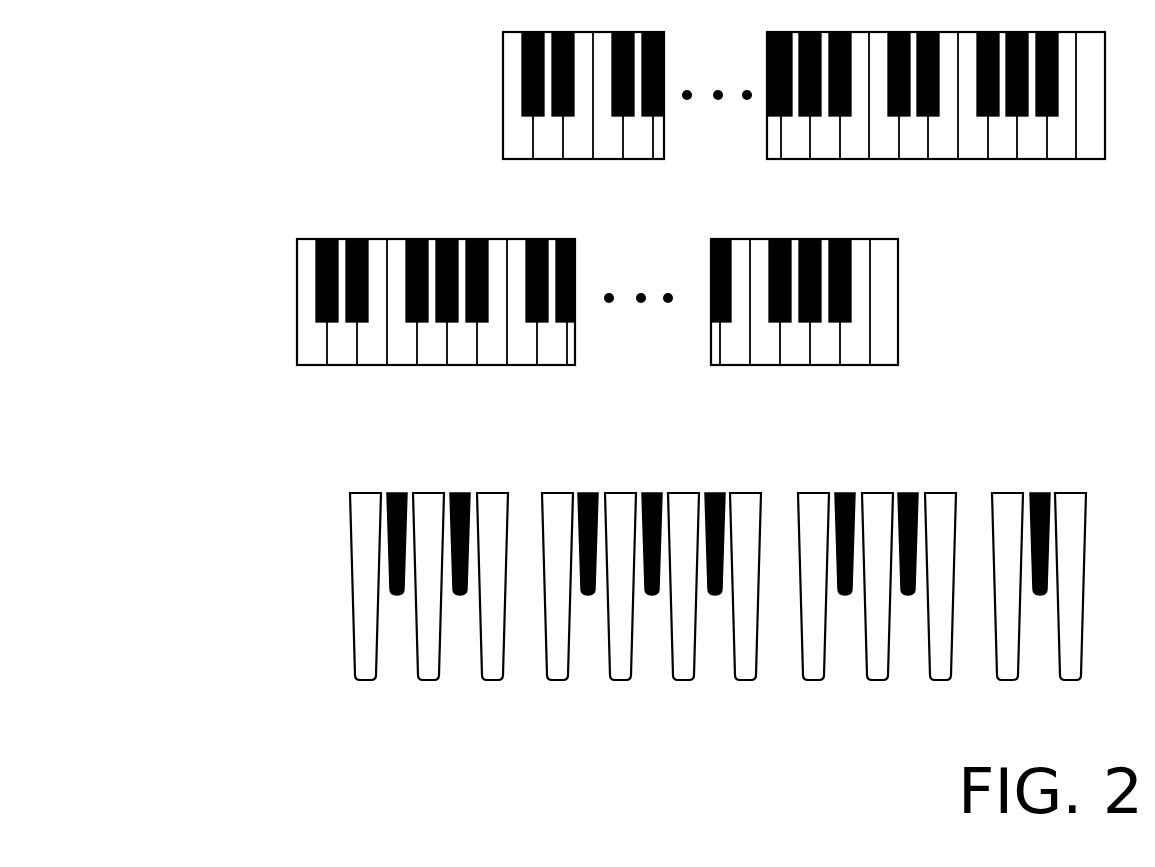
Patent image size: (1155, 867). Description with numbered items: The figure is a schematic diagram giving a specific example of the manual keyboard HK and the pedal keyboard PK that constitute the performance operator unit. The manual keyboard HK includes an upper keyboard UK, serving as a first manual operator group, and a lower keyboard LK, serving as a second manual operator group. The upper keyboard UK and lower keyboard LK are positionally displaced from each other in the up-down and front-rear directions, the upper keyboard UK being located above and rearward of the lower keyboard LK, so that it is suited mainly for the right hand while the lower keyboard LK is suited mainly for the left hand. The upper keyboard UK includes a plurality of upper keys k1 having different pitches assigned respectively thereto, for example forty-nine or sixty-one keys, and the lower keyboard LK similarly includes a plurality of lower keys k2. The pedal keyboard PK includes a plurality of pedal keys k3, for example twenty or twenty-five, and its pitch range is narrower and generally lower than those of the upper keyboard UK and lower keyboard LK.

The manual keyboard HK is at (135, 42).
The upper keyboard UK is at (447, 95).
The lower keyboard LK is at (234, 298).
The pedal keyboard PK is at (266, 550).
The upper keys k1 is at (1003, 147).
The lower keys k2 is at (305, 363).
The pedal keys k3 is at (362, 672).